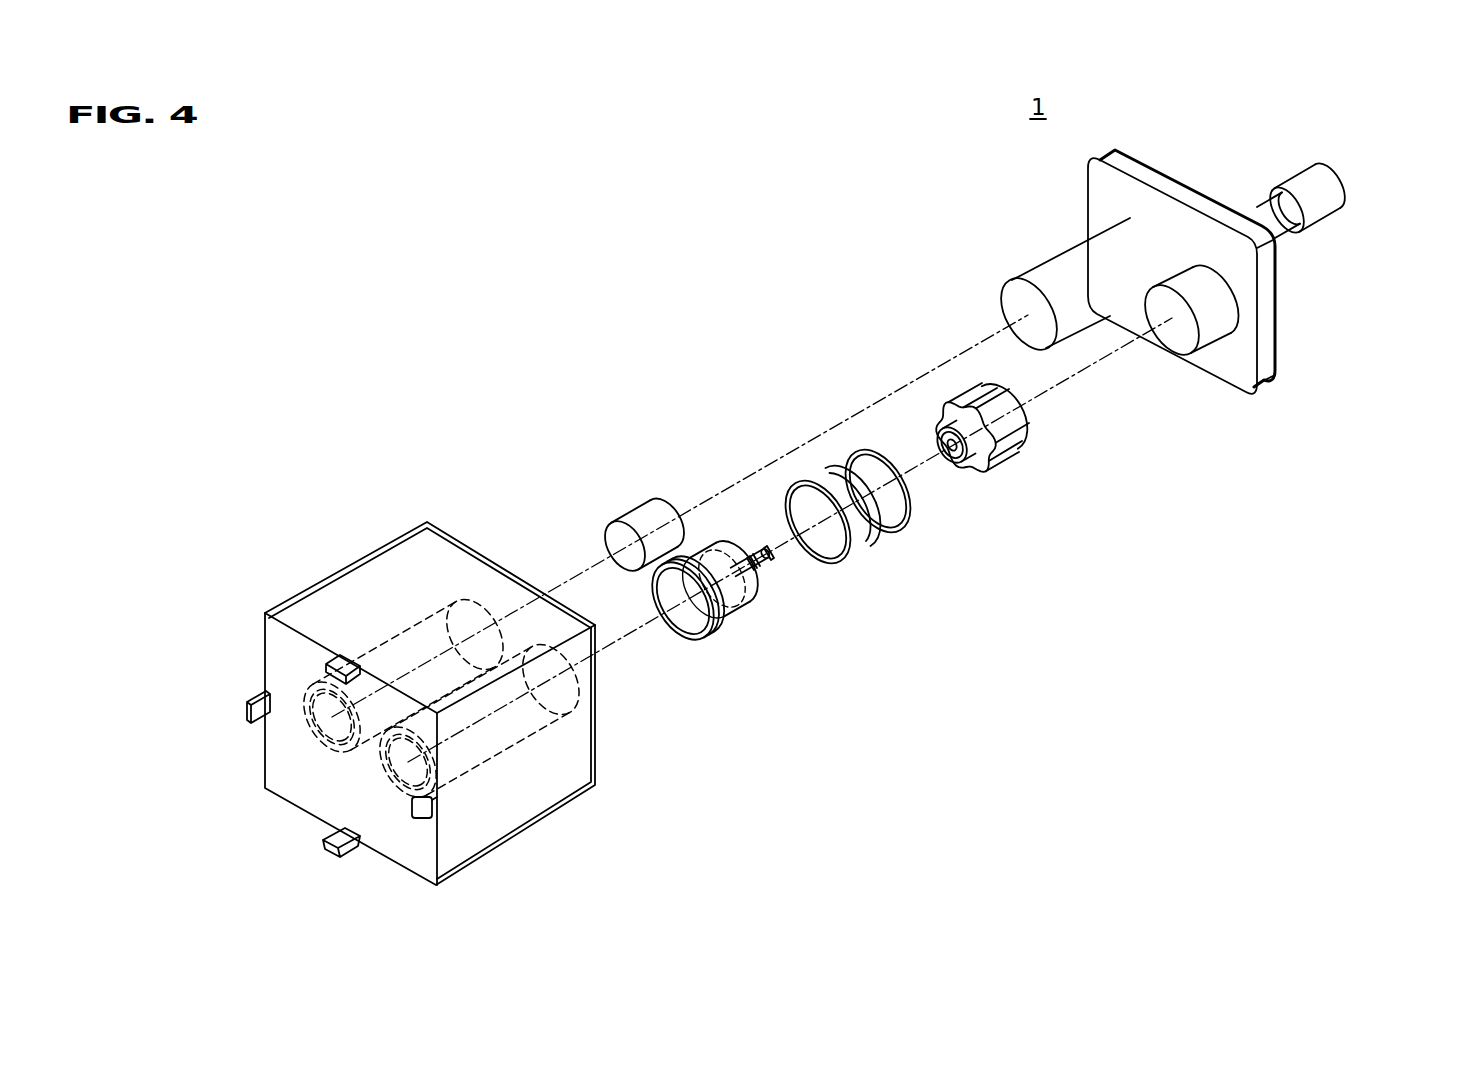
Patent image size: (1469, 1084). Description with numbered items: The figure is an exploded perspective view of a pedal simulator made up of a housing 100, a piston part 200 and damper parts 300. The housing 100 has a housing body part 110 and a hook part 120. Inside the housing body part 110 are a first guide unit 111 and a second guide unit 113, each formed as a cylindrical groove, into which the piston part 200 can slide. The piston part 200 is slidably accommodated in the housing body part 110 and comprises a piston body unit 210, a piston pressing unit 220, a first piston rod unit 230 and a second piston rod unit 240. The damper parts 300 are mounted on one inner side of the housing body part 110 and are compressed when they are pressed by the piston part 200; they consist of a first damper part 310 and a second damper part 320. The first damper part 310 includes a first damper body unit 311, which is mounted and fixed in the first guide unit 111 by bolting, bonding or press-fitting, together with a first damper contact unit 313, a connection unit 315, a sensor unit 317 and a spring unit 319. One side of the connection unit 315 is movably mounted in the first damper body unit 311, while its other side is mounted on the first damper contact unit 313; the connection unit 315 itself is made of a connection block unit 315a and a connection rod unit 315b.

The housing 100 is at (464, 694).
The housing body part 110 is at (353, 591).
The first guide unit 111 is at (541, 728).
The second guide unit 113 is at (403, 635).
The hook part 120 is at (340, 844).
The piston part 200 is at (1208, 305).
The piston body unit 210 is at (1276, 383).
The piston pressing unit 220 is at (1322, 203).
The first piston rod unit 230 is at (1185, 340).
The second piston rod unit 240 is at (1062, 260).
The damper parts 300 is at (709, 415).
The first damper part 310 is at (888, 544).
The first damper body unit 311 is at (716, 636).
The first damper contact unit 313 is at (1034, 420).
The connection unit 315 is at (785, 623).
The connection block unit 315a is at (752, 617).
The connection rod unit 315b is at (772, 562).
The sensor unit 317 is at (1009, 446).
The spring unit 319 is at (884, 536).
The second damper part 320 is at (636, 508).